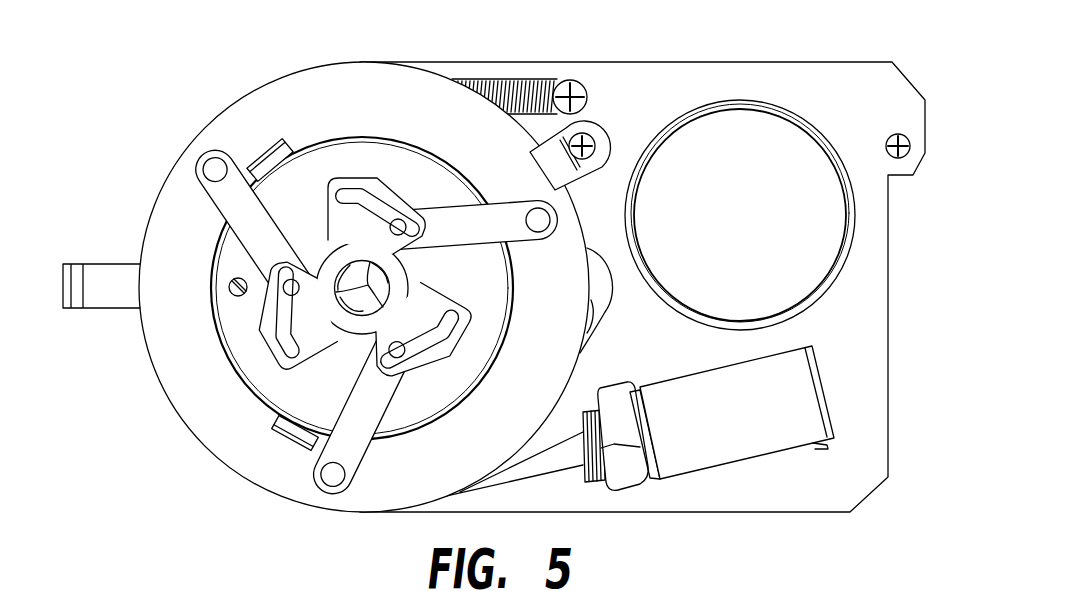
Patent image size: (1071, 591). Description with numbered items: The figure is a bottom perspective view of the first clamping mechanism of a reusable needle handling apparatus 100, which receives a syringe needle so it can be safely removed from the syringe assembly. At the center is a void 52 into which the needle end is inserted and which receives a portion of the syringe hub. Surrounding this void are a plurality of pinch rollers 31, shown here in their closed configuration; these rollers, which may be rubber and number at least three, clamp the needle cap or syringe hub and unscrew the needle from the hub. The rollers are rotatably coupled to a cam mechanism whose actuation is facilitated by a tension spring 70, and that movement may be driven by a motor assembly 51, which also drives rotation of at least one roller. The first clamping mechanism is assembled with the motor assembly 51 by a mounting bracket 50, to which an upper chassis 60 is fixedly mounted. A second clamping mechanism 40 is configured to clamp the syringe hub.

The reusable needle handling apparatus 100 is at (157, 55).
The pinch rollers 31 is at (351, 306).
The second clamping mechanism 40 is at (296, 104).
The mounting bracket 50 is at (787, 88).
The motor assembly 51 is at (718, 437).
The void/opening 52 is at (370, 285).
The upper chassis 60 is at (228, 418).
The tension spring 70 is at (503, 78).